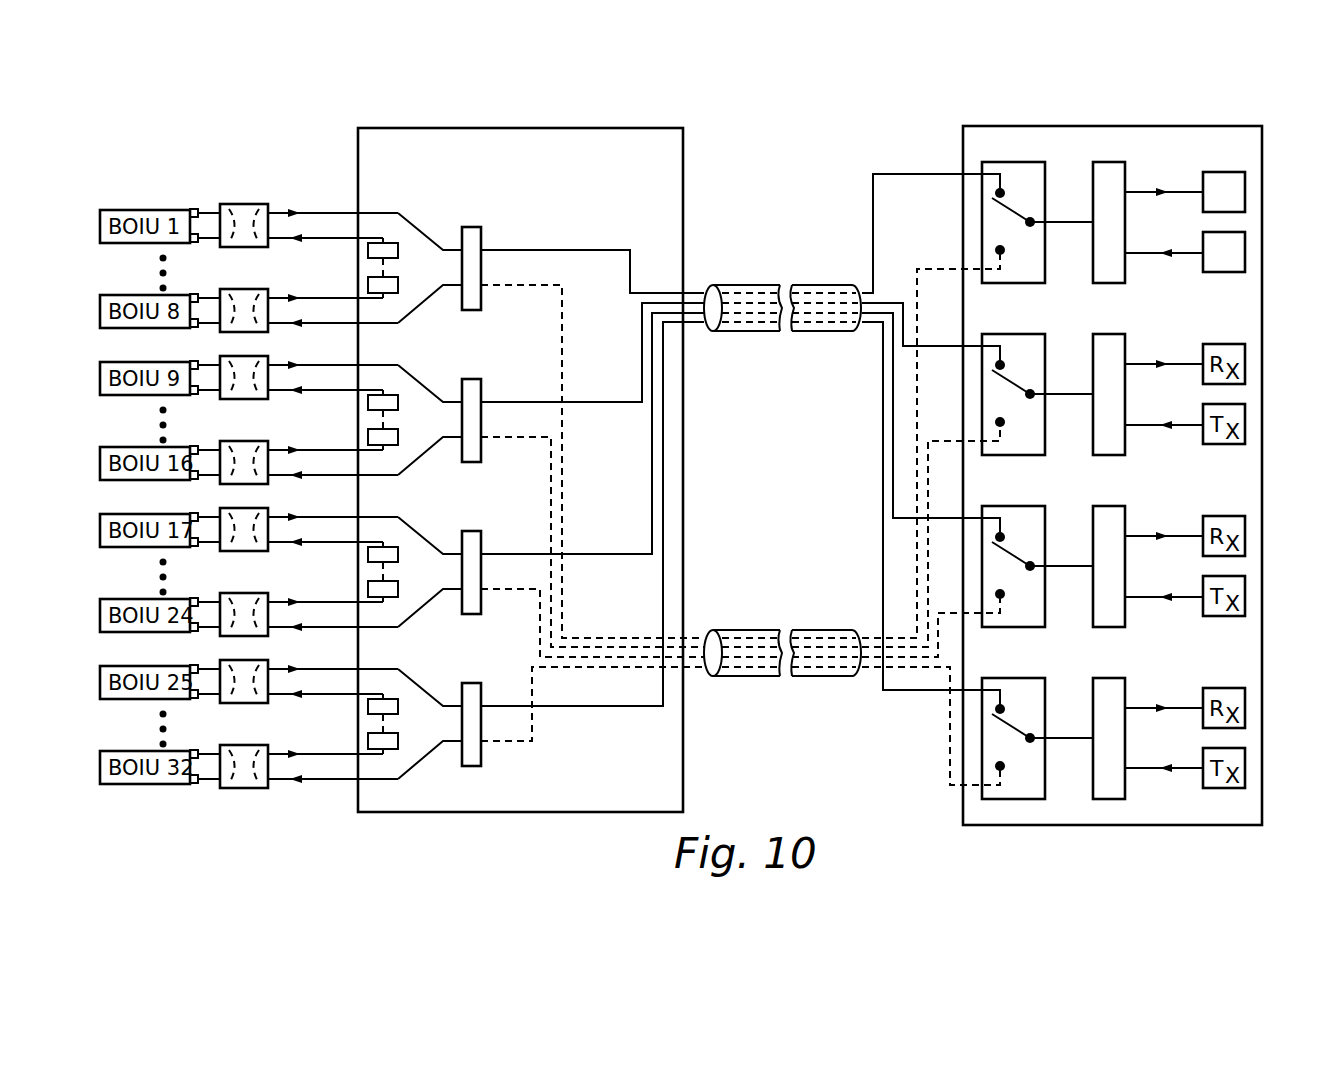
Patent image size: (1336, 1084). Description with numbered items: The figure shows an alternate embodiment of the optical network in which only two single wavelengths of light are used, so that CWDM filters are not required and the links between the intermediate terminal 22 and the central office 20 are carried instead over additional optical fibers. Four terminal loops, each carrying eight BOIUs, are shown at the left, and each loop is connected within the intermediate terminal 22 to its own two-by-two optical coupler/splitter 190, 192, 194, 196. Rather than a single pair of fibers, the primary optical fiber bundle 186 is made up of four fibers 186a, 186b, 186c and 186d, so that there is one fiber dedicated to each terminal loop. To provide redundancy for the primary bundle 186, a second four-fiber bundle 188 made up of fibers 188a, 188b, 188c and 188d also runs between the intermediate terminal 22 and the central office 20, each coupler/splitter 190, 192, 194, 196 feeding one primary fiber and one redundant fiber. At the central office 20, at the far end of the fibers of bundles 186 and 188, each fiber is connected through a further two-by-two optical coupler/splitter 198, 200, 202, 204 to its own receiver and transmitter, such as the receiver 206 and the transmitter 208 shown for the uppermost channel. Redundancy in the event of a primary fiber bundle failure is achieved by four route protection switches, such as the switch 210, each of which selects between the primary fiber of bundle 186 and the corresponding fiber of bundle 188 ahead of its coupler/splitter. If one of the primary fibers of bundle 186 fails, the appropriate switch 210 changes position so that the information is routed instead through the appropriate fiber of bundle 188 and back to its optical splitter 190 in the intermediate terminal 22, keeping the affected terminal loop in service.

The central office 20 is at (1262, 665).
The intermediate terminal 22 is at (684, 440).
The primary optical fiber bundle 186 is at (772, 284).
The optical fiber 186a is at (584, 250).
The optical fiber 186b is at (579, 402).
The optical fiber 186c is at (582, 554).
The optical fiber 186d is at (588, 708).
The second four-fiber bundle 188 is at (774, 628).
The optical fiber 188a is at (558, 362).
The optical fiber 188b is at (546, 512).
The optical fiber 188c is at (537, 618).
The optical fiber 188d is at (502, 742).
The optical coupler/splitter 190 is at (470, 227).
The optical coupler/splitter 192 is at (470, 379).
The optical coupler/splitter 194 is at (470, 531).
The optical coupler/splitter 196 is at (470, 683).
The optical coupler/splitter 198 is at (1128, 176).
The optical coupler/splitter 200 is at (1128, 348).
The optical coupler/splitter 202 is at (1128, 520).
The optical coupler/splitter 204 is at (1128, 692).
The receiver 206 is at (1245, 193).
The transmitter 208 is at (1245, 253).
The route protection switch 210 is at (1020, 283).